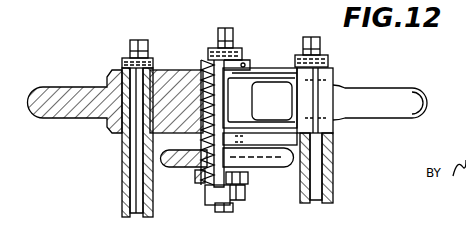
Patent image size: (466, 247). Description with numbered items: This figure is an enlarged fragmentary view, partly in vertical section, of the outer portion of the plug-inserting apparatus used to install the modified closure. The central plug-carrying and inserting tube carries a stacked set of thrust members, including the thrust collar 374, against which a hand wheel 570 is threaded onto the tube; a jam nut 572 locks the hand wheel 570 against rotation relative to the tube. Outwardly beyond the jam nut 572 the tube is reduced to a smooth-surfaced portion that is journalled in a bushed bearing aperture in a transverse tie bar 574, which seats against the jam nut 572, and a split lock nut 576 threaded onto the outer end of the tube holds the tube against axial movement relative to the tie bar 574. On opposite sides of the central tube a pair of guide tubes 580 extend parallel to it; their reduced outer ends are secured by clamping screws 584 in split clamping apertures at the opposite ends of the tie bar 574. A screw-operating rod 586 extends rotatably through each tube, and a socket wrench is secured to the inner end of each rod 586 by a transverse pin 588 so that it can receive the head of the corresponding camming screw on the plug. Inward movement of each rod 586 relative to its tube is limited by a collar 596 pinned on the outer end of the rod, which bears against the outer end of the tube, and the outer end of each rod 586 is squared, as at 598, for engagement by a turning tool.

The thrust collar 374 is at (245, 193).
The hand wheel 570 is at (177, 168).
The jam nut 572 is at (241, 143).
The transverse tie bar 574 is at (267, 72).
The split lock nut 576 is at (249, 61).
The guide tubes 580 is at (121, 183).
The clamping screws 584 is at (337, 72).
The screw-operating rod 586 is at (135, 159).
The transverse pin 588 is at (205, 92).
The collar 596 is at (122, 61).
The squared outer end 598 is at (130, 40).